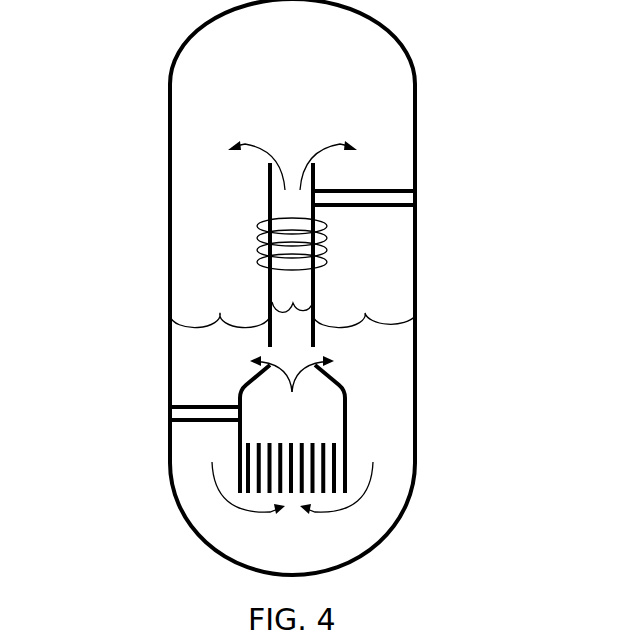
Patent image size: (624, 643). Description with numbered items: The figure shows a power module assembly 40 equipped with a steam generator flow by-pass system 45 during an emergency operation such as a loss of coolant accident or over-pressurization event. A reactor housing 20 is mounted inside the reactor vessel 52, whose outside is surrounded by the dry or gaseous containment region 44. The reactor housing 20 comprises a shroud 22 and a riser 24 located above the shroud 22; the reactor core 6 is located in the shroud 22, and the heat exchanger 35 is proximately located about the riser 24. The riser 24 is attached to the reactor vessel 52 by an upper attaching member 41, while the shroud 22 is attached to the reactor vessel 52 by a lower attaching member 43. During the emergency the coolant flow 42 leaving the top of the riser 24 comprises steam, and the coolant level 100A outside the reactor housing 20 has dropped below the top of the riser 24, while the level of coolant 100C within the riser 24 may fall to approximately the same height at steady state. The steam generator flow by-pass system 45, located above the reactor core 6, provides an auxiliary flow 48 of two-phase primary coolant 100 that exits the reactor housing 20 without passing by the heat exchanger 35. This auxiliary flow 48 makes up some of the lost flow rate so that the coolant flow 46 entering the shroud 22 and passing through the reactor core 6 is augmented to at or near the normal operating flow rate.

The power module assembly 40 is at (436, 36).
The reactor vessel 52 is at (428, 103).
The containment region 44 is at (304, 55).
The riser 24 is at (265, 200).
The upper attaching member 41 is at (384, 183).
The lower attaching member 43 is at (196, 432).
The heat exchanger 35 is at (255, 250).
The coolant flow 42 is at (270, 127).
The reactor housing 20 is at (352, 276).
The coolant 100 is at (257, 538).
The coolant level 100A is at (381, 312).
The level of coolant within the riser 100C is at (283, 300).
The steam generator flow by-pass system 45 is at (317, 352).
The auxiliary flow 48 is at (243, 358).
The shroud 22 is at (350, 407).
The reactor core 6 is at (352, 458).
The coolant flow 46 is at (382, 508).